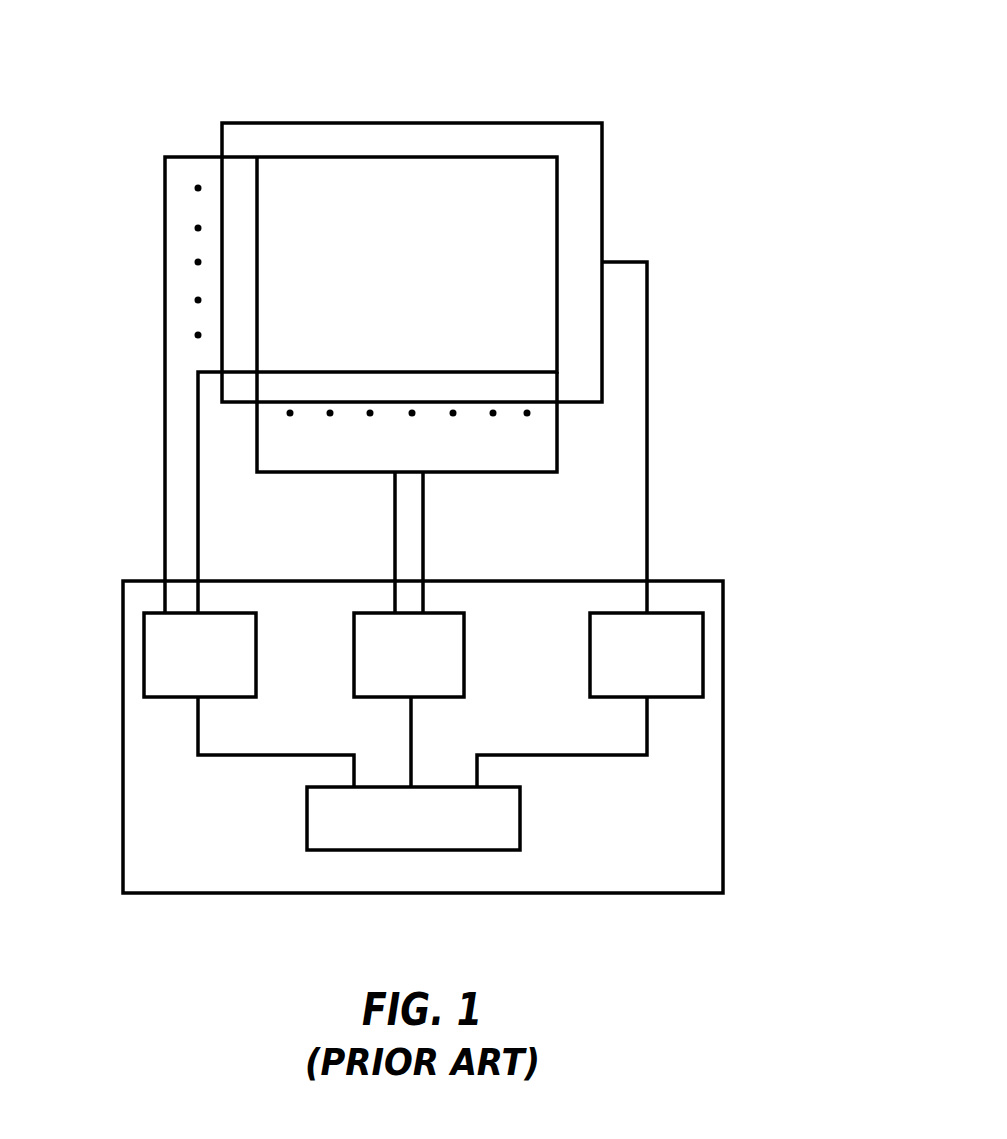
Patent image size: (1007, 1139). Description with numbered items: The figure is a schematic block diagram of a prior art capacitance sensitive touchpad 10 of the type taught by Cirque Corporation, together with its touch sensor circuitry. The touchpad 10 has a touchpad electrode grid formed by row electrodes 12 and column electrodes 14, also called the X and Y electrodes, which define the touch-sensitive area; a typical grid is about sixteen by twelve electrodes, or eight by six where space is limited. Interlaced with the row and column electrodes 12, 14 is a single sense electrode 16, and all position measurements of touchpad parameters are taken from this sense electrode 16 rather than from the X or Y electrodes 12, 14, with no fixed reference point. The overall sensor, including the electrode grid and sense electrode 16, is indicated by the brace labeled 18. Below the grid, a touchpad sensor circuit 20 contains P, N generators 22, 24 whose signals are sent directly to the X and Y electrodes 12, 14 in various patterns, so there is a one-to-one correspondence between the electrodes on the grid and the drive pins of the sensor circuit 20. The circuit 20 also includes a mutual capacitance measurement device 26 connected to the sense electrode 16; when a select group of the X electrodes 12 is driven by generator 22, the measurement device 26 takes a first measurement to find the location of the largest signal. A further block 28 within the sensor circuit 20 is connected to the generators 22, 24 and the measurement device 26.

The capacitance sensitive touchpad 10 is at (568, 120).
The row electrodes 12 is at (184, 378).
The column electrodes 14 is at (565, 490).
The sense electrode 16 is at (647, 287).
The touch sensor 18 is at (748, 104).
The touchpad sensor circuit 20 is at (723, 748).
The P, N generator 22 is at (144, 645).
The P, N generator 24 is at (464, 655).
The mutual capacitance measurement device 26 is at (590, 665).
The processor 28 is at (520, 823).